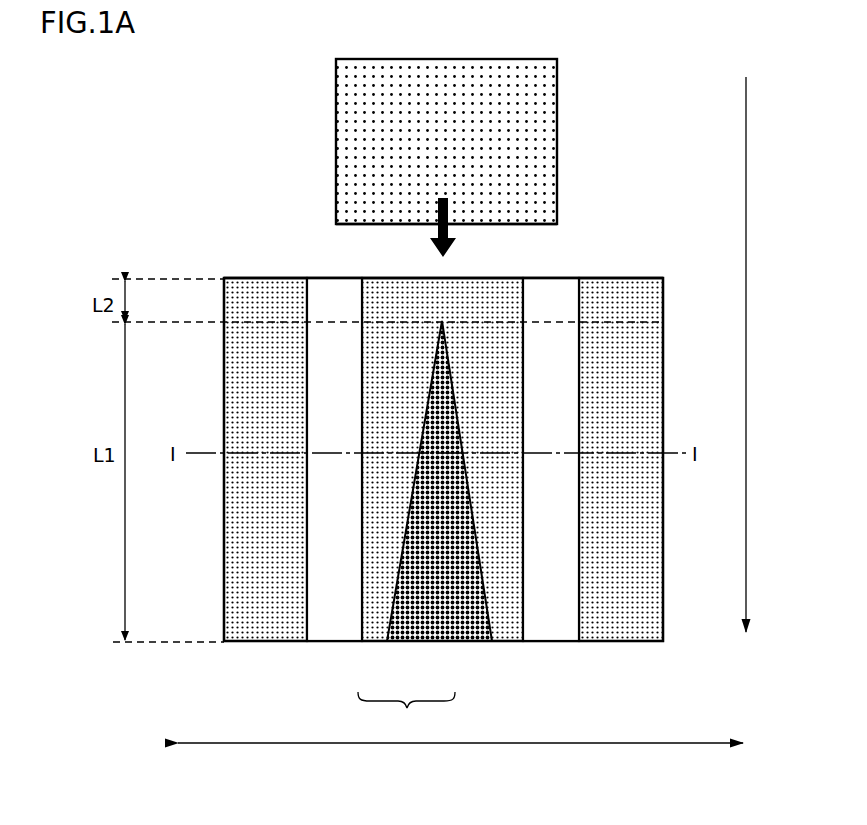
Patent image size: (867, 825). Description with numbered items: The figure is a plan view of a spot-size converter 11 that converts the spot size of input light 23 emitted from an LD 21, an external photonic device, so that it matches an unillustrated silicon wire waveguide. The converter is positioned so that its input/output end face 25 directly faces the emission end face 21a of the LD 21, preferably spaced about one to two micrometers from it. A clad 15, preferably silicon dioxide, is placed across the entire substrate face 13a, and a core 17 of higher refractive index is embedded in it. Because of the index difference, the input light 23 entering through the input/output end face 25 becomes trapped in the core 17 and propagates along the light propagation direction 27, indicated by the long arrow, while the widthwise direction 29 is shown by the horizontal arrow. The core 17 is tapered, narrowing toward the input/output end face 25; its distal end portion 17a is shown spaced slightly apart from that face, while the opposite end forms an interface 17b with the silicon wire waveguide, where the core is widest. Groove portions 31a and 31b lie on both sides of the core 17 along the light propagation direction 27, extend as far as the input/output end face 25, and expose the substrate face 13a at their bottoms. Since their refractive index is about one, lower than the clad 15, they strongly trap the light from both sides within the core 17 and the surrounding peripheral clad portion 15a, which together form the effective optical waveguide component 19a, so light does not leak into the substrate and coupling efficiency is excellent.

The spot-size converter 11 is at (604, 63).
The substrate face 13a is at (325, 340).
The clad 15 is at (260, 632).
The peripheral clad portion 15a is at (370, 632).
The core 17 is at (440, 632).
The distal end portion 17a is at (443, 318).
The interface 17b is at (484, 648).
The effective optical waveguide component 19a is at (406, 711).
The LD 21 is at (438, 76).
The emission end face 21a is at (353, 230).
The input light 23 is at (434, 246).
The input/output end face 25 is at (502, 274).
The light propagation direction 27 is at (748, 257).
The widthwise direction 29 is at (258, 744).
The groove portion 31a is at (322, 292).
The groove portion 31b is at (545, 294).